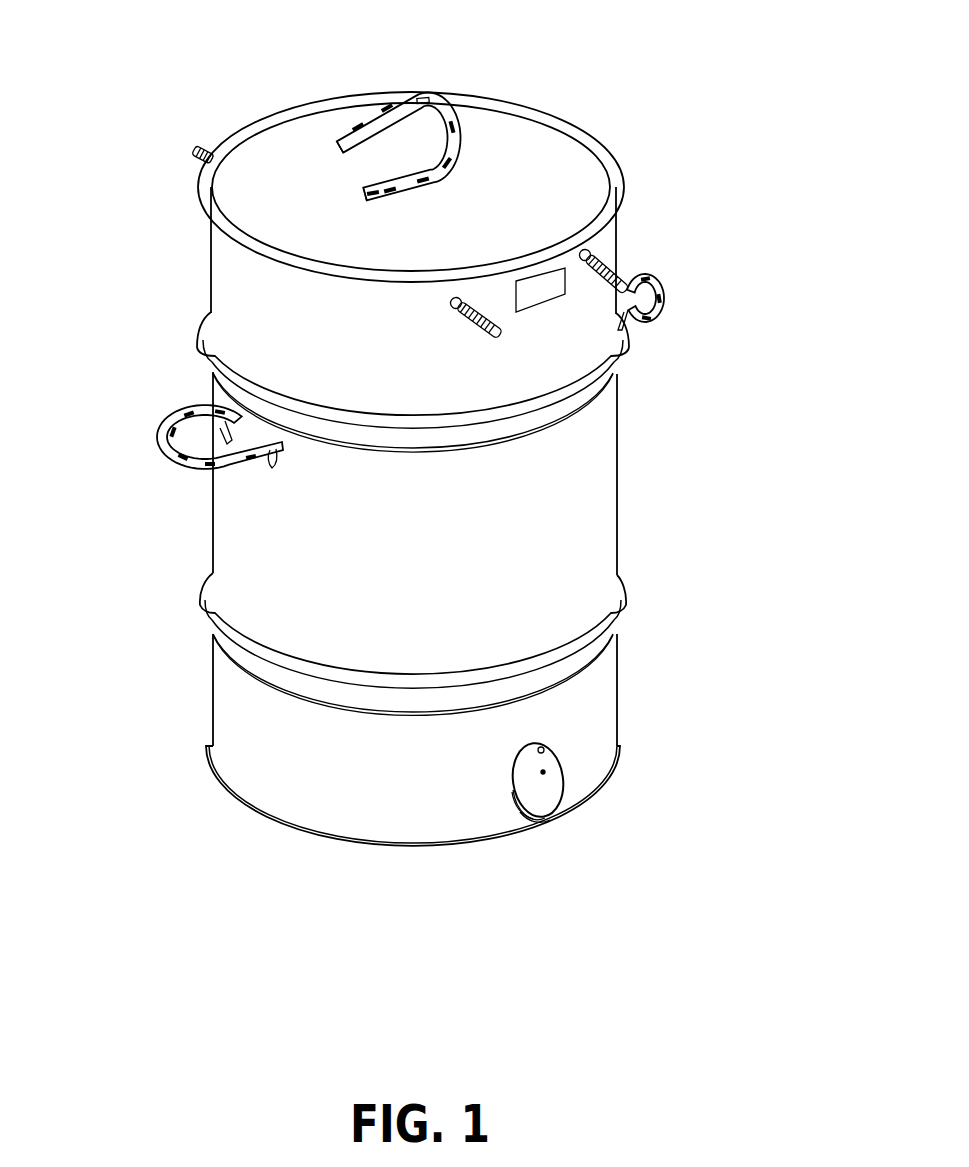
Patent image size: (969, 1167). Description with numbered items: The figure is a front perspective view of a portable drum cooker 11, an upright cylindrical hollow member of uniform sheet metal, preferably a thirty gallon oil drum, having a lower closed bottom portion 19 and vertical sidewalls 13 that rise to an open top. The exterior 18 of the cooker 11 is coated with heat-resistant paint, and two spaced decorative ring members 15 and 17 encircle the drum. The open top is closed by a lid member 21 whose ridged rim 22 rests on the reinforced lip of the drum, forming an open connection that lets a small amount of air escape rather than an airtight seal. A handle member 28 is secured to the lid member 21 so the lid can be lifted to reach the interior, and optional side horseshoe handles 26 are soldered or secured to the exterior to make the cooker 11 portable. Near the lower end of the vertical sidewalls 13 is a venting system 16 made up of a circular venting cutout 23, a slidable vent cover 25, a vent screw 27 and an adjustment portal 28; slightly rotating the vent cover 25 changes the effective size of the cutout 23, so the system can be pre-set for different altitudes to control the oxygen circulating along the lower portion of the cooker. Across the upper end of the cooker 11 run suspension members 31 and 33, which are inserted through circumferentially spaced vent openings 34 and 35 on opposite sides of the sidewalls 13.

The drum cooker 11 is at (622, 149).
The vertical sidewalls 13 is at (605, 488).
The decorative ring member 15 is at (632, 357).
The venting system 16 is at (528, 792).
The decorative ring member 17 is at (630, 612).
The exterior 18 is at (213, 530).
The closed bottom portion 19 is at (598, 800).
The lid member 21 is at (495, 128).
The ridged rim 22 is at (623, 183).
The circular venting cutout 23 is at (535, 815).
The slidable vent cover 25 is at (557, 765).
The side horseshoe handles 26 is at (155, 445).
The vent screw 27 is at (546, 745).
The handle member / adjustment portal 28 is at (415, 97).
The suspension member 31 is at (628, 279).
The suspension member 33 is at (496, 332).
The vent opening 34 is at (455, 303).
The vent opening 35 is at (590, 258).